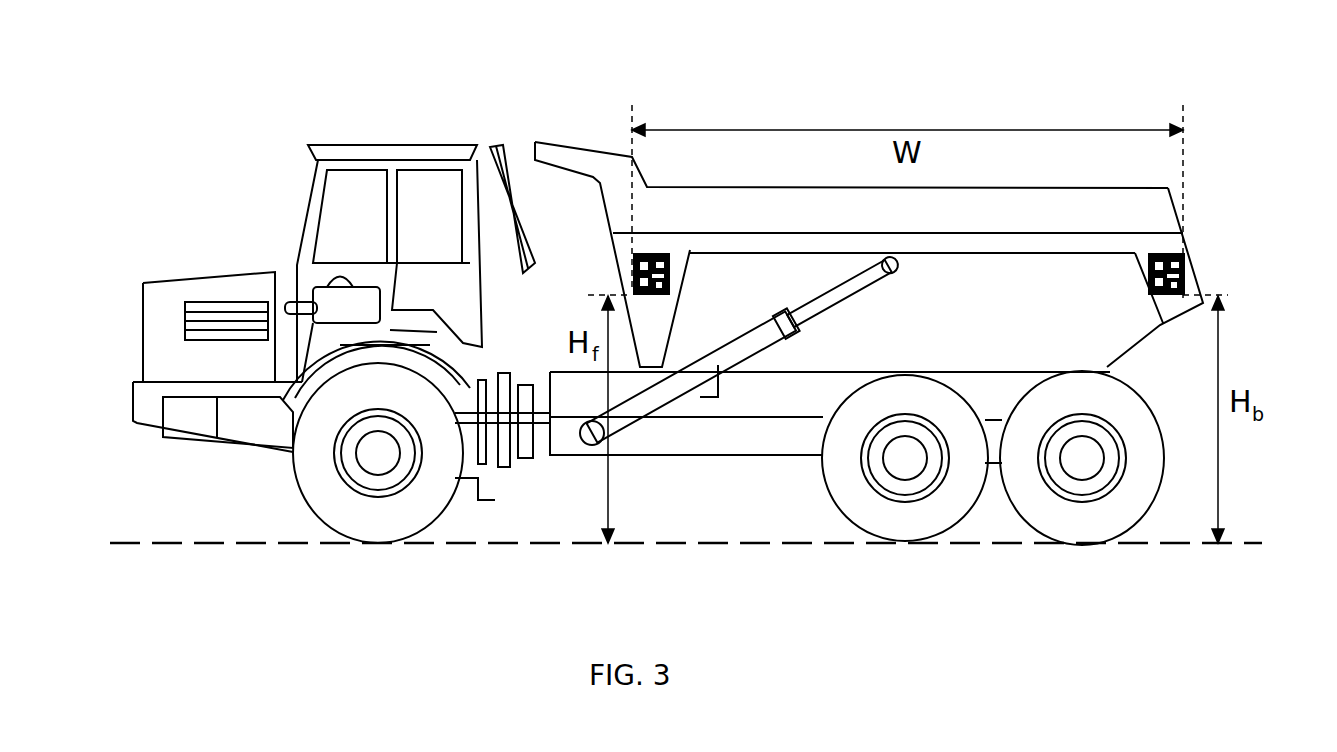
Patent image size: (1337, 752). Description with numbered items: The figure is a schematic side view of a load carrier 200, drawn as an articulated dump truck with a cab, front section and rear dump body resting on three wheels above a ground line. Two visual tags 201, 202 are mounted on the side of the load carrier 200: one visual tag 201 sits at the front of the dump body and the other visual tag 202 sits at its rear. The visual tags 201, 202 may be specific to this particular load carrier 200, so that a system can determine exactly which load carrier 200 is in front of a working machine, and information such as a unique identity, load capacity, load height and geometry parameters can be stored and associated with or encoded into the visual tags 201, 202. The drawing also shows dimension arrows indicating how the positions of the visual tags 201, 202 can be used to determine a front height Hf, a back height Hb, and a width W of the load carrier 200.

The load carrier 200 is at (406, 142).
The visual tag 201 is at (652, 255).
The visual tag 202 is at (1185, 263).